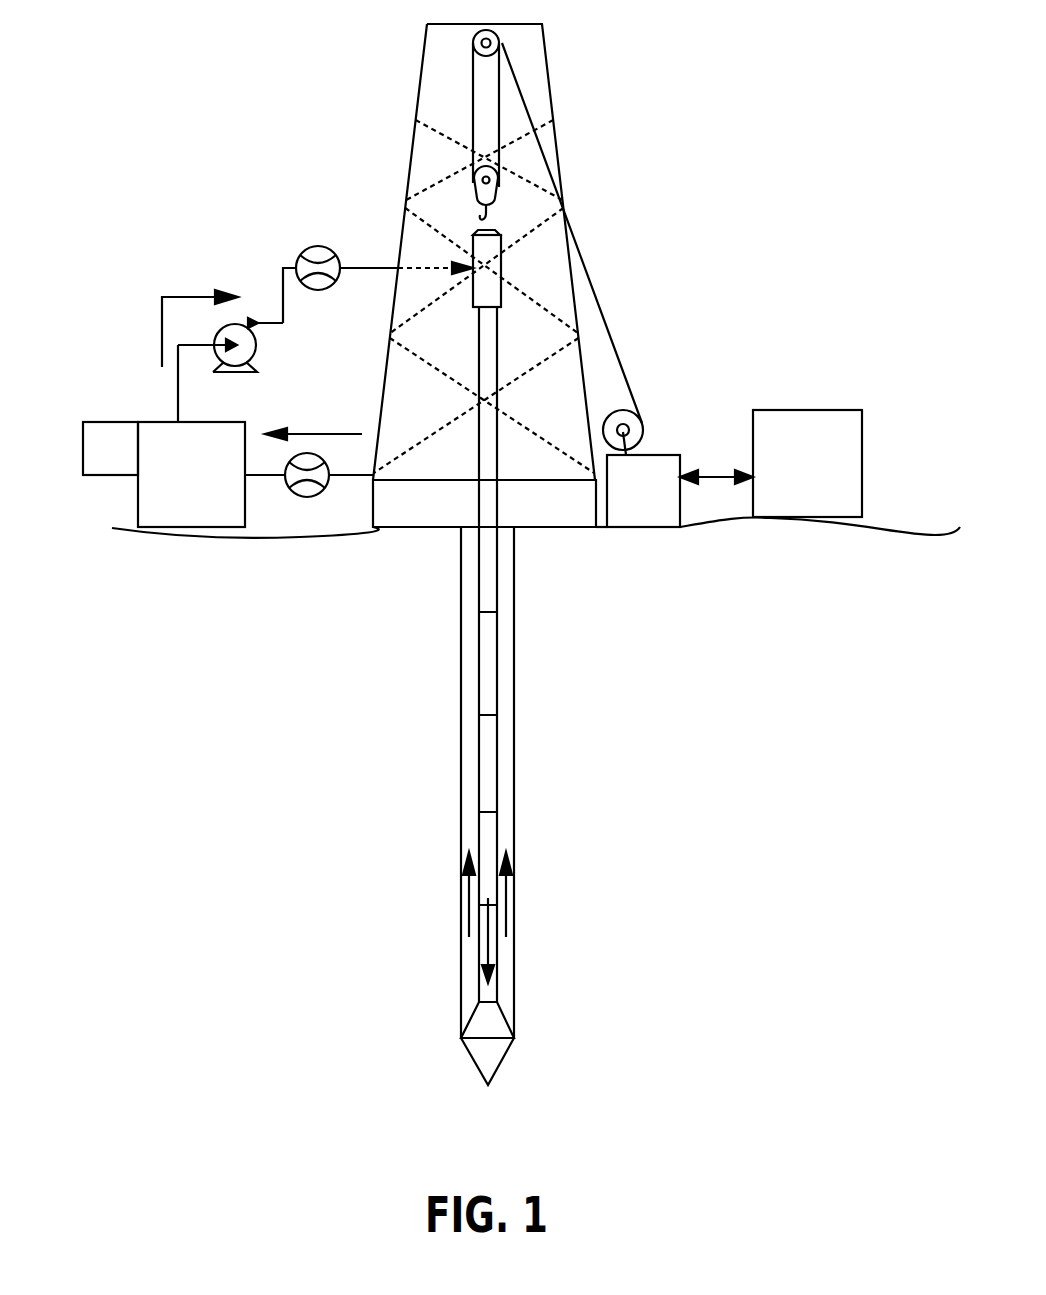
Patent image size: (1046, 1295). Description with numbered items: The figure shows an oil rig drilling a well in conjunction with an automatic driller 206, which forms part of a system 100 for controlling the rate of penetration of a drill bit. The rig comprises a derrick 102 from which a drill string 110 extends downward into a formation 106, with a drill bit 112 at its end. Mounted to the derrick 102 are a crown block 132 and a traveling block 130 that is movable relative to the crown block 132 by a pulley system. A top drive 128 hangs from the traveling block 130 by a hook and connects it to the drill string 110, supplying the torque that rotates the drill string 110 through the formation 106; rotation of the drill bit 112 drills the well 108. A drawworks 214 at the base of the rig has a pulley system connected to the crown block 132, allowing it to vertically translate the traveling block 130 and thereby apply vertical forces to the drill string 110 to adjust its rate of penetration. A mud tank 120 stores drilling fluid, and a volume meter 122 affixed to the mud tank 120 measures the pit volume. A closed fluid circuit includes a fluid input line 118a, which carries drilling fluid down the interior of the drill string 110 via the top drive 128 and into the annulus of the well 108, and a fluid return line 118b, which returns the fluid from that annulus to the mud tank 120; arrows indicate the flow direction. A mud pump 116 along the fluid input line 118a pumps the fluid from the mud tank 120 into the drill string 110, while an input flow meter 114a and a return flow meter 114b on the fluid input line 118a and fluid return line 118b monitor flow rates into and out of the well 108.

The system 100 is at (233, 97).
The derrick 102 is at (410, 163).
The formation 106 is at (701, 810).
The well 108 is at (505, 668).
The drill string 110 is at (487, 778).
The drill bit 112 is at (487, 1063).
The input flow meter 114a is at (312, 290).
The return flow meter 114b is at (313, 497).
The mud pump 116 is at (258, 338).
The fluid input line 118a is at (365, 268).
The fluid return line 118b is at (262, 476).
The mud tank 120 is at (215, 487).
The volume meter 122 is at (113, 420).
The top drive 128 is at (501, 272).
The traveling block 130 is at (498, 192).
The crown block 132 is at (473, 44).
The automatic driller 206 is at (831, 476).
The drawworks 214 is at (667, 502).